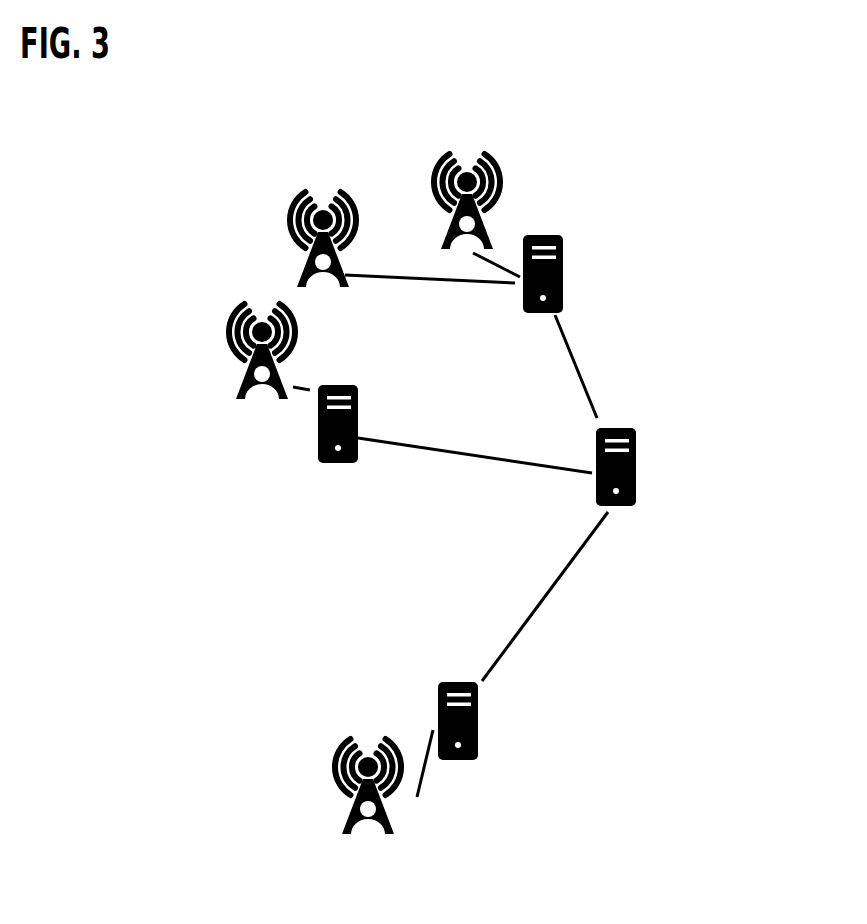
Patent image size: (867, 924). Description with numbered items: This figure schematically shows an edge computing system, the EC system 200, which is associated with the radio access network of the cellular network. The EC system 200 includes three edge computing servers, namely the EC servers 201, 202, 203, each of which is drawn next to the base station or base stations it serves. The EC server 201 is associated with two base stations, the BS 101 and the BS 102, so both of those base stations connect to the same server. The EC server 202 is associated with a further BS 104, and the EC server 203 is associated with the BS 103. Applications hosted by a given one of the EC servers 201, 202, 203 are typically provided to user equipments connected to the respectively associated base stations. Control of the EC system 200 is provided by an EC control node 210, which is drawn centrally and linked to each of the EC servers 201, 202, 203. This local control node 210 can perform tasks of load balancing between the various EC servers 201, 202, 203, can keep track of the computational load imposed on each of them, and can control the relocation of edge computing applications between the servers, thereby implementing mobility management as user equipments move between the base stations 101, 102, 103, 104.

The EC system 200 is at (719, 87).
The BS 101 is at (428, 182).
The BS 102 is at (283, 222).
The BS 103 is at (331, 767).
The further BS 104 is at (222, 349).
The EC server 201 is at (563, 291).
The EC server 202 is at (318, 442).
The EC server 203 is at (438, 703).
The EC control node 210 is at (596, 496).